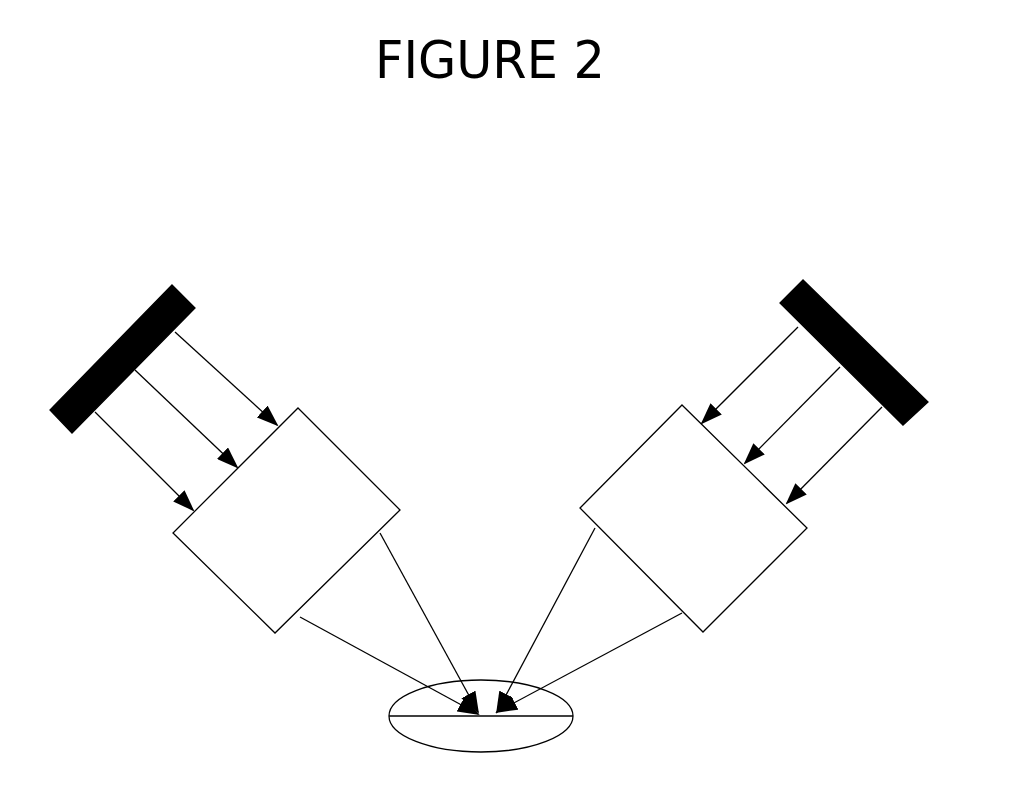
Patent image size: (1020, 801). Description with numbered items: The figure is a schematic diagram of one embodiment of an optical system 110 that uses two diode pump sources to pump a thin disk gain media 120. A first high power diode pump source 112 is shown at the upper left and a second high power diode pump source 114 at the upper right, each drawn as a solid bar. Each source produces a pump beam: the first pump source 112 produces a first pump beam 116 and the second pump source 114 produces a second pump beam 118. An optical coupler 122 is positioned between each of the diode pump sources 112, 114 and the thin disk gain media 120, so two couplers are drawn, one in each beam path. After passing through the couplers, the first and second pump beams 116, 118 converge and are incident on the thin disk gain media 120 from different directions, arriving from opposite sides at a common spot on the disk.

The optical system 110 is at (488, 418).
The first high power diode pump source 112 is at (122, 359).
The second high power diode pump source 114 is at (854, 352).
The first pump beam 116 is at (389, 623).
The second pump beam 118 is at (589, 620).
The thin disk gain media 120 is at (481, 730).
The optical coupler 122 is at (490, 519).